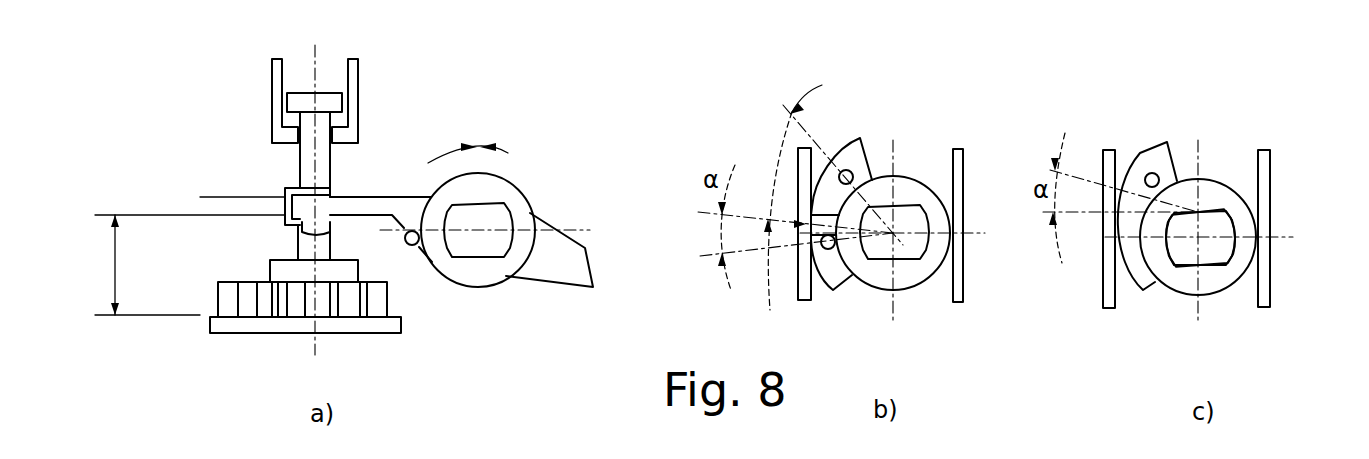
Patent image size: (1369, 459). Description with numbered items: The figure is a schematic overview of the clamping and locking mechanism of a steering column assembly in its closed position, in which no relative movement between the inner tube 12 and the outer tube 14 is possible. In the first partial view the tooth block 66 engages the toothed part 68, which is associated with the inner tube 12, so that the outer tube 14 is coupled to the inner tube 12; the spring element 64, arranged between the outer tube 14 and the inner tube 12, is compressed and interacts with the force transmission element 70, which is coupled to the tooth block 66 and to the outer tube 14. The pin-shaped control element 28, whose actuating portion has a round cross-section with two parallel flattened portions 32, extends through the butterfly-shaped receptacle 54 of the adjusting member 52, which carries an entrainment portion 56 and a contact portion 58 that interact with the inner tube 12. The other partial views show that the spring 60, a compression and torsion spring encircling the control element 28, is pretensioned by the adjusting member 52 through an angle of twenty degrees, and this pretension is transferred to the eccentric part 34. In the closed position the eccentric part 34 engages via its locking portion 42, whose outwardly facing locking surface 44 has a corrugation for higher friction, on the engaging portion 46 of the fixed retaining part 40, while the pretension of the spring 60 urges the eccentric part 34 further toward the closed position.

The inner tube 12 is at (240, 327).
The outer tube 14 is at (355, 85).
The control element 28 is at (500, 218).
The flattened portions 32 is at (467, 262).
The eccentric part 34 is at (1213, 187).
The retaining part 40 is at (958, 148).
The locking portion 42 is at (867, 158).
The locking surface 44 is at (1111, 223).
The engaging portion 46 is at (821, 244).
The adjusting member 52 is at (512, 190).
The receptacle 54 is at (498, 262).
The entrainment portion 56 is at (392, 197).
The contact portion 58 is at (575, 262).
The spring 60 is at (414, 245).
The spring element 64 is at (285, 205).
The tooth block 66 is at (343, 305).
The toothed part 68 is at (235, 305).
The force transmission element 70 is at (305, 165).